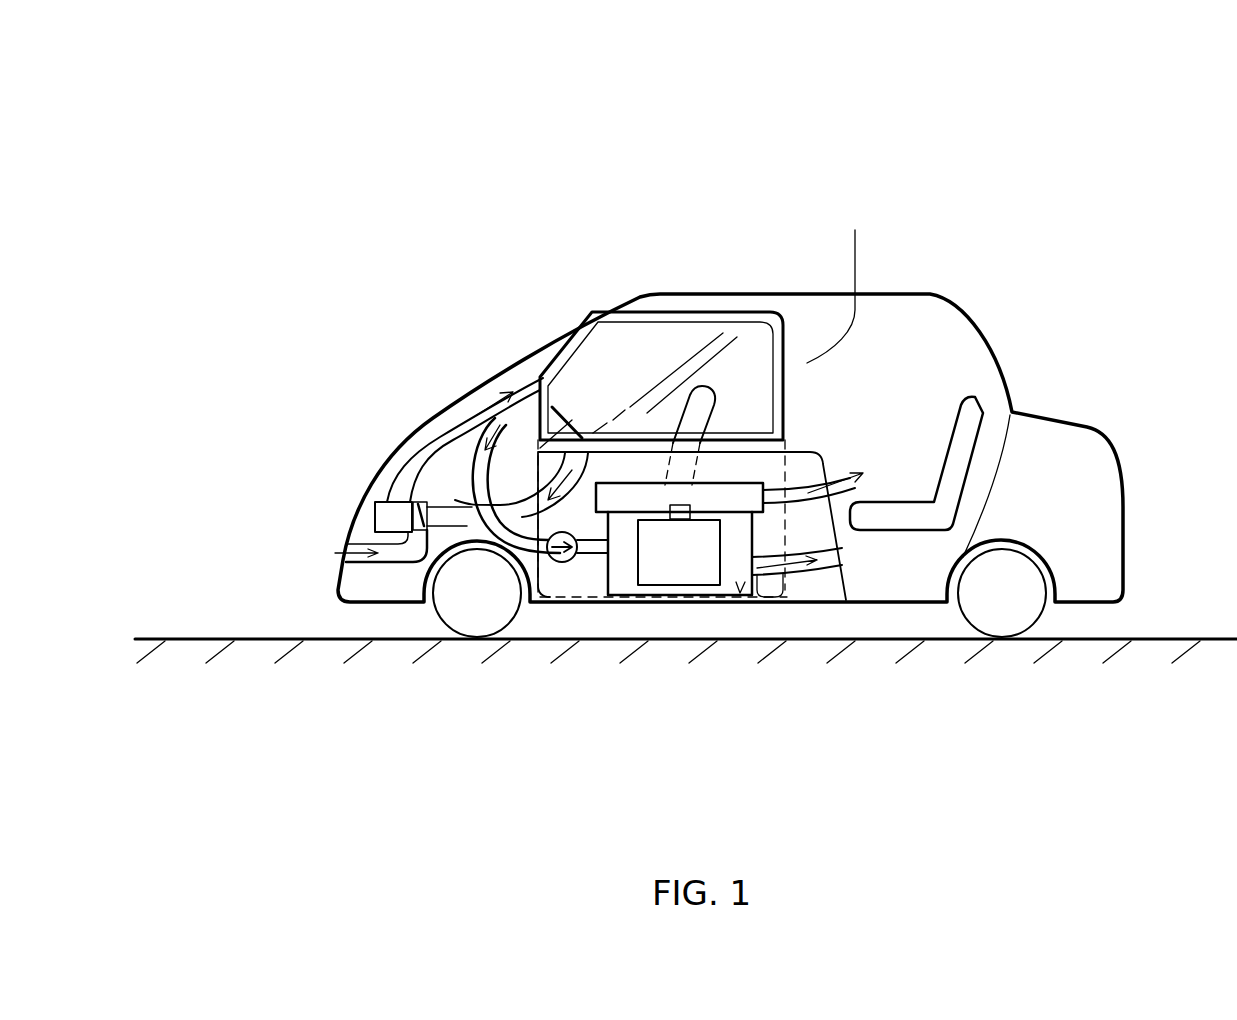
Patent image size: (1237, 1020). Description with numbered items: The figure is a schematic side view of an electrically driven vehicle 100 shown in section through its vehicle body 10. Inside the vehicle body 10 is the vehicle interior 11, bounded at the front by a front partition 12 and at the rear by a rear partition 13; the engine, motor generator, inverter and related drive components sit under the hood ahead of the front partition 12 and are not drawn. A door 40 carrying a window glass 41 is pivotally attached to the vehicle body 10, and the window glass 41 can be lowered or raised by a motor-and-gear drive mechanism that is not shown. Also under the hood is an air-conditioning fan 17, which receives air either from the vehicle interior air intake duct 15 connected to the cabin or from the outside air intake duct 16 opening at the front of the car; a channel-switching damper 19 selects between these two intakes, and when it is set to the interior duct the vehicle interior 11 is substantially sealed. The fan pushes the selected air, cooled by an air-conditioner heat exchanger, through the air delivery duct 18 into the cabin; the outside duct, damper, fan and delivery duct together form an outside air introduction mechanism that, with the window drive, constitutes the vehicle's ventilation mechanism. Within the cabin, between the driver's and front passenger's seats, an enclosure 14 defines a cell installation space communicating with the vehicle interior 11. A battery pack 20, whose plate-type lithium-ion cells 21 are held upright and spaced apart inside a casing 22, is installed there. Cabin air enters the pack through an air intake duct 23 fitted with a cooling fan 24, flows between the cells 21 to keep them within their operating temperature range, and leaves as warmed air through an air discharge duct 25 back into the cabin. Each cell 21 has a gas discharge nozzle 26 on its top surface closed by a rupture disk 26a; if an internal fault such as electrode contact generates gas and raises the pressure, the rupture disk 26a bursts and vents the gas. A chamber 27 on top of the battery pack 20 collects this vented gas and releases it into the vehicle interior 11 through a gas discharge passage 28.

The electrically driven vehicle 100 is at (1080, 183).
The vehicle body 10 is at (998, 358).
The vehicle interior 11 is at (847, 284).
The front partition 12 is at (478, 495).
The rear partition 13 is at (1002, 472).
The enclosure 14 is at (720, 483).
The vehicle interior air intake duct 15 is at (610, 462).
The outside air intake duct 16 is at (398, 556).
The air-conditioning fan 17 is at (380, 523).
The air delivery duct 18 is at (432, 434).
The channel-switching damper 19 is at (414, 513).
The battery pack 20 is at (740, 595).
The cell 21 is at (673, 567).
The casing 22 is at (753, 590).
The air intake duct 23 is at (497, 553).
The cooling fan 24 is at (562, 565).
The air discharge duct 25 is at (808, 573).
The gas discharge nozzle 26 is at (624, 592).
The rupture disk 26a is at (613, 588).
The chamber 27 is at (717, 590).
The gas discharge passage 28 is at (797, 503).
The door 40 is at (790, 407).
The window glass 41 is at (750, 340).